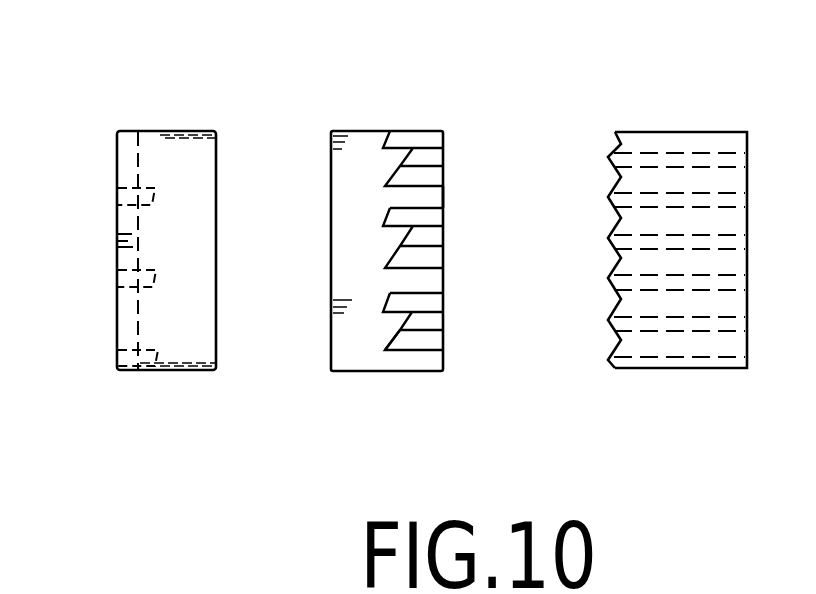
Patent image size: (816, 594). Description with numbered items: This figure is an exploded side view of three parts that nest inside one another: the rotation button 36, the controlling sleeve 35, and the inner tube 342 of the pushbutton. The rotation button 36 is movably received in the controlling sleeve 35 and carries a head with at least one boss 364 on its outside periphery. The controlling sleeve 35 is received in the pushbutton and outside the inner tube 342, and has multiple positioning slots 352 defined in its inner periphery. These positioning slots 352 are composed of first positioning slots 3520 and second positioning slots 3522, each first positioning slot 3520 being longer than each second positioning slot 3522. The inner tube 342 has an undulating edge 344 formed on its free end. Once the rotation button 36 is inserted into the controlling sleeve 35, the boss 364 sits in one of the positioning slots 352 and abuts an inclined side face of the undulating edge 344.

The rotation button 36 is at (182, 137).
The boss 364 is at (120, 192).
The controlling sleeve 35 is at (344, 137).
The positioning slots 352 is at (418, 136).
The first positioning slots 3520 is at (439, 200).
The second positioning slots 3522 is at (400, 324).
The undulating edge 344 is at (609, 148).
The inner tube 342 is at (697, 136).